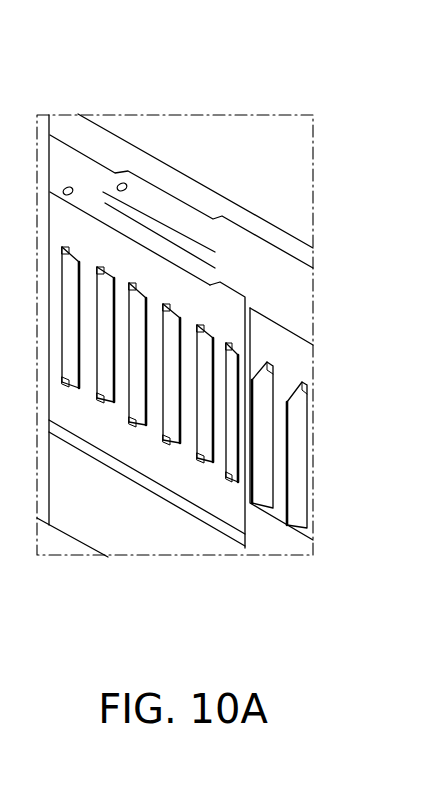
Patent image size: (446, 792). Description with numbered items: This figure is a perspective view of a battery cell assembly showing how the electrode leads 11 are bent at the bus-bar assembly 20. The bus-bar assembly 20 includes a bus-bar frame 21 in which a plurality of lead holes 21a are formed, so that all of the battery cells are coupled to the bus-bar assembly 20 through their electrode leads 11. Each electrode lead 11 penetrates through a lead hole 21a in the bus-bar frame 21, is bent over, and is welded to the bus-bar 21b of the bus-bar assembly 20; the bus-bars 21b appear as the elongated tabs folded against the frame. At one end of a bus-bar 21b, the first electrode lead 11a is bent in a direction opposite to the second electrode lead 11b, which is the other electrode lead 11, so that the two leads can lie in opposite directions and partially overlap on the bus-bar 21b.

The bus-bar assembly 20 is at (102, 58).
The bus-bar frame 21 is at (173, 180).
The lead hole 21a is at (95, 267).
The bus-bar 21b is at (215, 303).
The electrode lead 11 is at (148, 622).
The first electrode lead 11a is at (228, 460).
The second electrode lead 11b is at (205, 443).